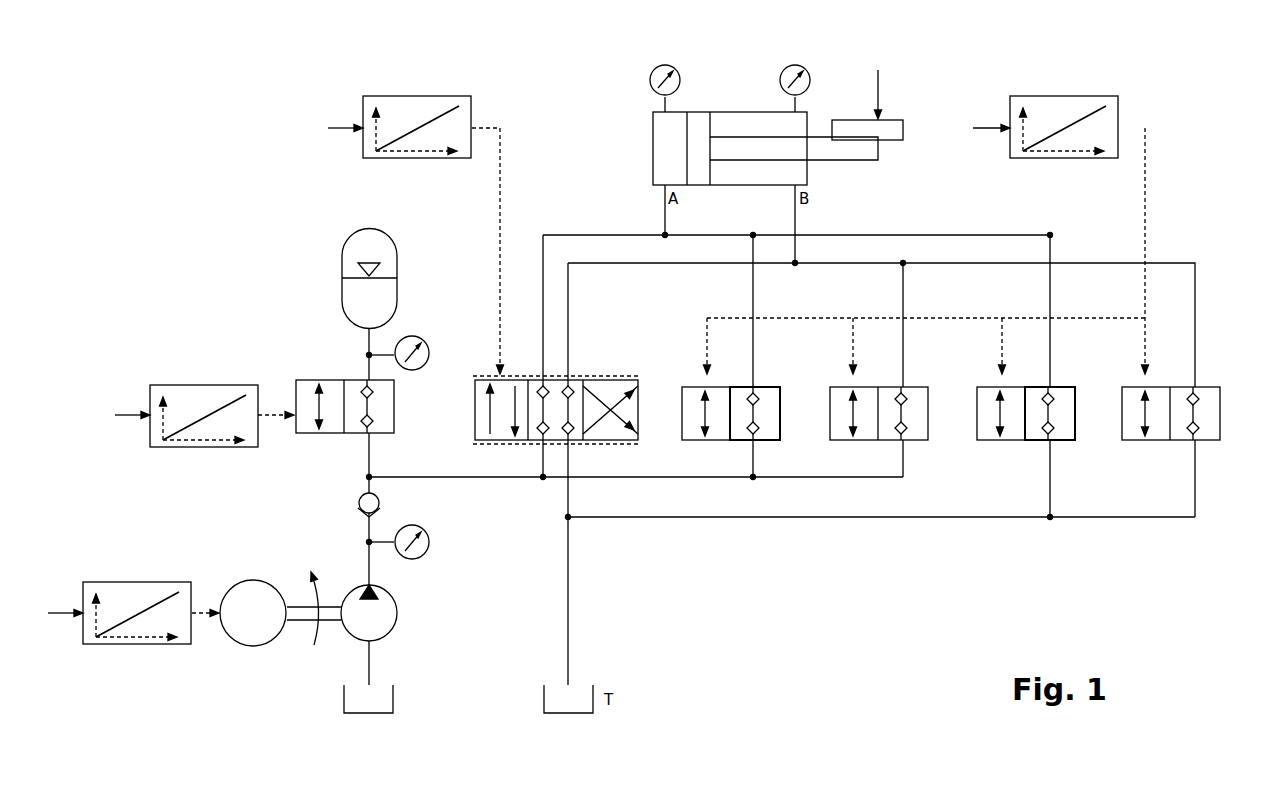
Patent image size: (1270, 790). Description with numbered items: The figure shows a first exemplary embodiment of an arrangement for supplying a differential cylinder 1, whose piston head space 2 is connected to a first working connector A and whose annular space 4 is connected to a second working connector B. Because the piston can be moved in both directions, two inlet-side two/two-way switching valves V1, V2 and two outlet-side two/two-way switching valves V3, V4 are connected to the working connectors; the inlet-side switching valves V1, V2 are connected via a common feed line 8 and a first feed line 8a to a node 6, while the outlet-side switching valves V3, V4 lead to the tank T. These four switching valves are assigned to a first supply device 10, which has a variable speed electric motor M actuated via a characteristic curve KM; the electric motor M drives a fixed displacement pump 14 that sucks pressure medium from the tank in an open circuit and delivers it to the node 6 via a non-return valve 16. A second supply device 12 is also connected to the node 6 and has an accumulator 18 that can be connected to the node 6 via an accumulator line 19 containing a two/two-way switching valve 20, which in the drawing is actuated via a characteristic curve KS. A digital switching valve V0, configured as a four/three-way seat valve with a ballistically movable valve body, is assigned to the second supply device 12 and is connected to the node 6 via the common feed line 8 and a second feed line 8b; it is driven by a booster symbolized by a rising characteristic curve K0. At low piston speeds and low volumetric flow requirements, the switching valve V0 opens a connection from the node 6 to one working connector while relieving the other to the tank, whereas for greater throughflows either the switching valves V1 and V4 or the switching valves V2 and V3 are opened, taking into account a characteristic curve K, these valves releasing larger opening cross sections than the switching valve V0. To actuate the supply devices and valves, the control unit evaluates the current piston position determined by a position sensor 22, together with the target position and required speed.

The differential cylinder 1 is at (718, 80).
The piston head space 2 is at (665, 148).
The annular space 4 is at (757, 125).
The node 6 is at (366, 478).
The common feed line 8 is at (470, 477).
The first feed line 8a is at (655, 480).
The second feed line 8b is at (538, 470).
The first supply device 10 is at (251, 624).
The second supply device 12 is at (283, 346).
The fixed displacement pump 14 is at (385, 625).
The non-return valve 16 is at (358, 514).
The accumulator 18 is at (350, 301).
The accumulator line 19 is at (373, 368).
The 2/2-way switching valve 20 is at (313, 437).
The position sensor 22 is at (898, 92).
The digital switching valve V0 is at (592, 367).
The inlet-side 2/2-way switching valve V1 is at (770, 375).
The inlet-side 2/2-way switching valve V2 is at (920, 375).
The outlet-side 2/2-way switching valve V3 is at (1065, 375).
The outlet-side 2/2-way switching valve V4 is at (1206, 372).
The characteristic curve K is at (1054, 115).
The characteristic curve K0 is at (408, 115).
The controller KS is at (204, 404).
The characteristic curve KM is at (133, 601).
The electric motor M is at (253, 613).